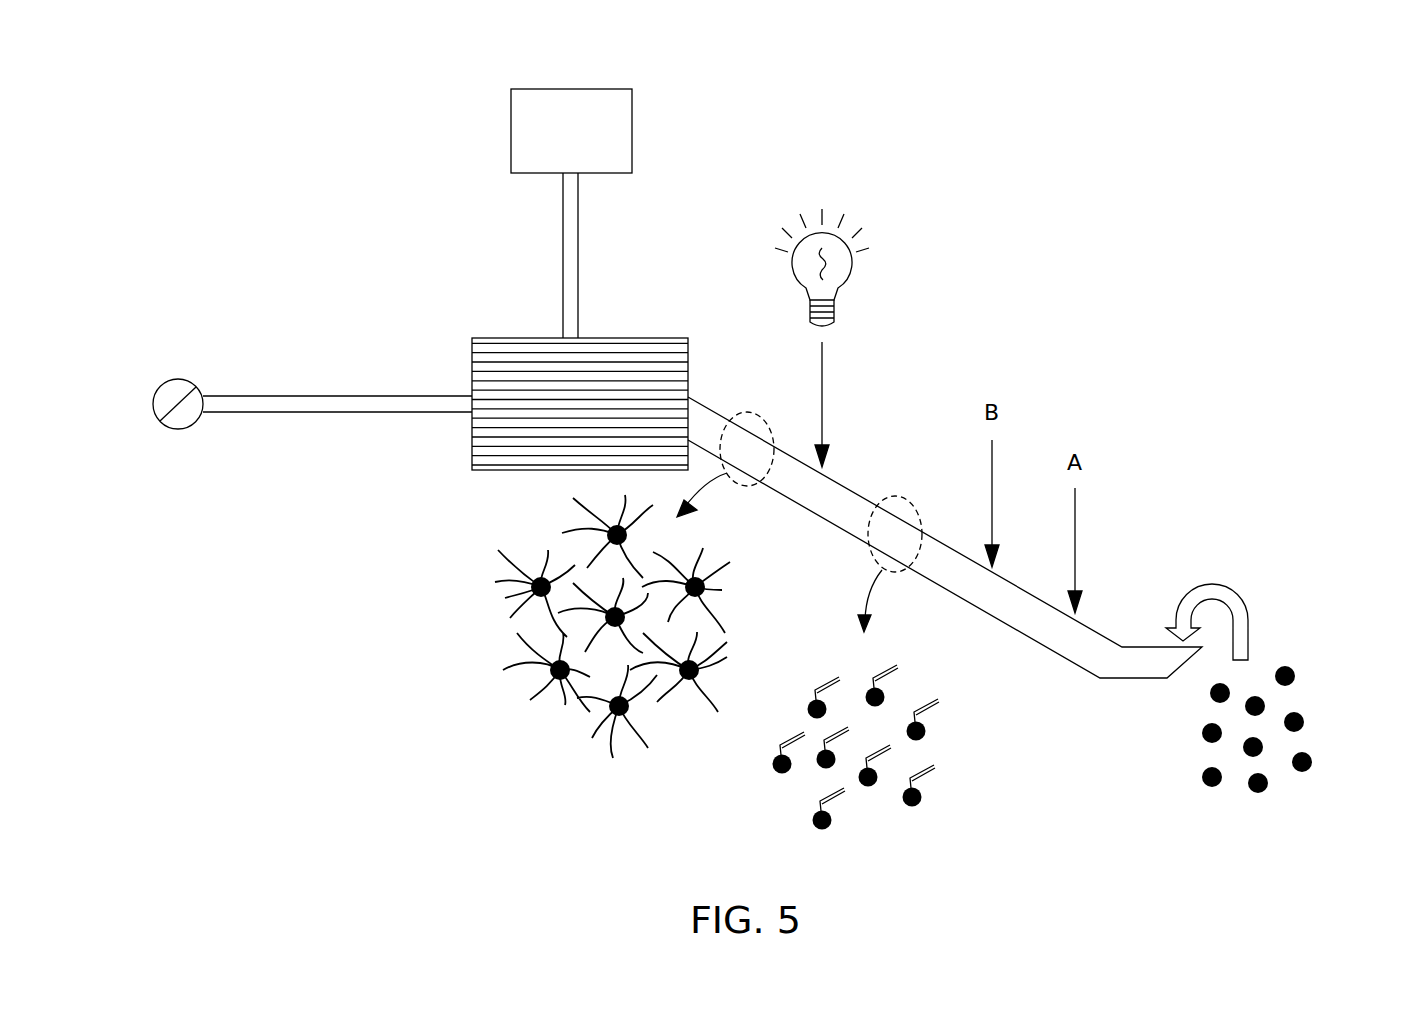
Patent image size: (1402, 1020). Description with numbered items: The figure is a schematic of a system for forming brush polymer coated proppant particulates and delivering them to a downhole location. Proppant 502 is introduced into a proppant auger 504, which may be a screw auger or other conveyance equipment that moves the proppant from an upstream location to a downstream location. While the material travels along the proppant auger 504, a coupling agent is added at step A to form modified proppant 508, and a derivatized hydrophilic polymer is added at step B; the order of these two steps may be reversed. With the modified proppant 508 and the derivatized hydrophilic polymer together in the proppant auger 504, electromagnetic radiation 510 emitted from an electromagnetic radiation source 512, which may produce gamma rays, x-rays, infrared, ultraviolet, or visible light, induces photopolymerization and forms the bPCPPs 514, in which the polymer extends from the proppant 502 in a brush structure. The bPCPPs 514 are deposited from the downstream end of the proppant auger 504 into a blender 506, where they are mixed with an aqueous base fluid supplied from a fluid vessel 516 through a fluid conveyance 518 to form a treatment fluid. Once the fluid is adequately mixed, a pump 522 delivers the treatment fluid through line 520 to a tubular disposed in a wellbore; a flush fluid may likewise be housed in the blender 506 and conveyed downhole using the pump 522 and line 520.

The proppant 502 is at (1218, 790).
The proppant auger 504 is at (1062, 660).
The blender 506 is at (650, 338).
The modified proppant 508 is at (883, 697).
The electromagnetic radiation 510 is at (823, 368).
The electromagnetic radiation source 512 is at (838, 300).
The bPCPPs 514 is at (505, 598).
The fluid vessel 516 is at (598, 88).
The fluid conveyance 518 is at (563, 242).
The line 520 is at (333, 396).
The pump 522 is at (175, 379).